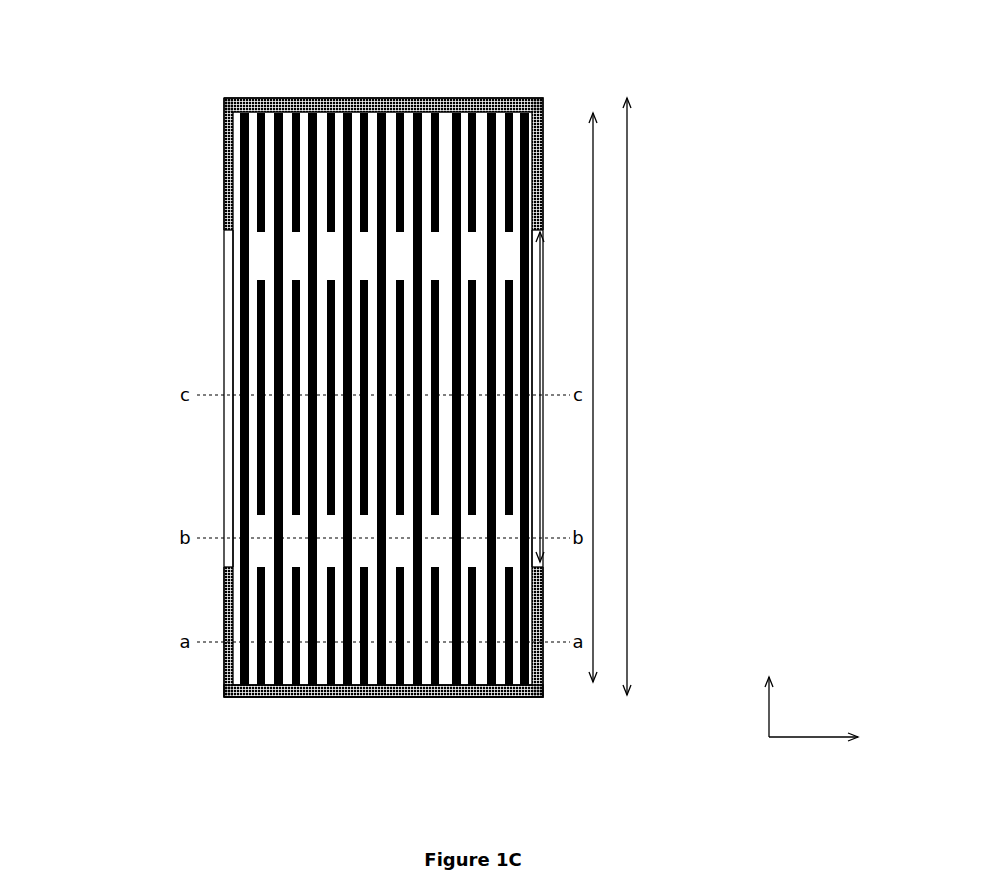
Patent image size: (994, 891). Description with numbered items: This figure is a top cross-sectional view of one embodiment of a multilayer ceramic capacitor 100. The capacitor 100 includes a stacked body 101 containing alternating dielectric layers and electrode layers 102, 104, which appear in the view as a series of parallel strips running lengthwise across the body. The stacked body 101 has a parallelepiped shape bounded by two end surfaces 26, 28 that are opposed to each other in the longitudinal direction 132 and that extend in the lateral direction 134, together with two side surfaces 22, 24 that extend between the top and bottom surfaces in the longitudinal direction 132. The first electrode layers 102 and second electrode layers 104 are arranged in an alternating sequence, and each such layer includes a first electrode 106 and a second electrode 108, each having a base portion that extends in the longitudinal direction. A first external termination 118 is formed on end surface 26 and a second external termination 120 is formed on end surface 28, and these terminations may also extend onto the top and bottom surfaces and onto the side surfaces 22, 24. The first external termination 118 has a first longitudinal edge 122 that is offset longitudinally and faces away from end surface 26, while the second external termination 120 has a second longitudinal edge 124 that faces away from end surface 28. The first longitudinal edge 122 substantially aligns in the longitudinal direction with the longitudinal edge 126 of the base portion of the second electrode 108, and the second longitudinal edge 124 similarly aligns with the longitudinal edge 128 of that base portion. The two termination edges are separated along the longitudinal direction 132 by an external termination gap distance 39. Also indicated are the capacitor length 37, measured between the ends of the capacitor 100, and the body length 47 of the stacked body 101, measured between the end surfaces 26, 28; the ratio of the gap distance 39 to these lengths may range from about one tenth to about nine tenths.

The multilayer ceramic capacitor 100 is at (165, 82).
The stacked body 101 is at (232, 157).
The first external termination 118 is at (530, 693).
The longitudinal edge of the base portion of the second electrode 128 is at (262, 232).
The longitudinal edge of the base portion of the second electrode 126 is at (240, 568).
The side surface 22 is at (232, 320).
The second longitudinal edge 124 is at (541, 228).
The first longitudinal edge 122 is at (541, 560).
The side surface 24 is at (535, 290).
The first electrode layer 102 is at (253, 687).
The end surface 28 is at (283, 112).
The second electrode layer 104 is at (310, 687).
The first electrode 106 is at (417, 112).
The second electrode 108 is at (367, 112).
The end surface 26 is at (482, 685).
The second external termination 120 is at (508, 112).
The external termination gap distance 39 is at (552, 397).
The body length 47 is at (595, 384).
The capacitor length 37 is at (628, 383).
The longitudinal direction 132 is at (768, 694).
The lateral direction 134 is at (834, 739).